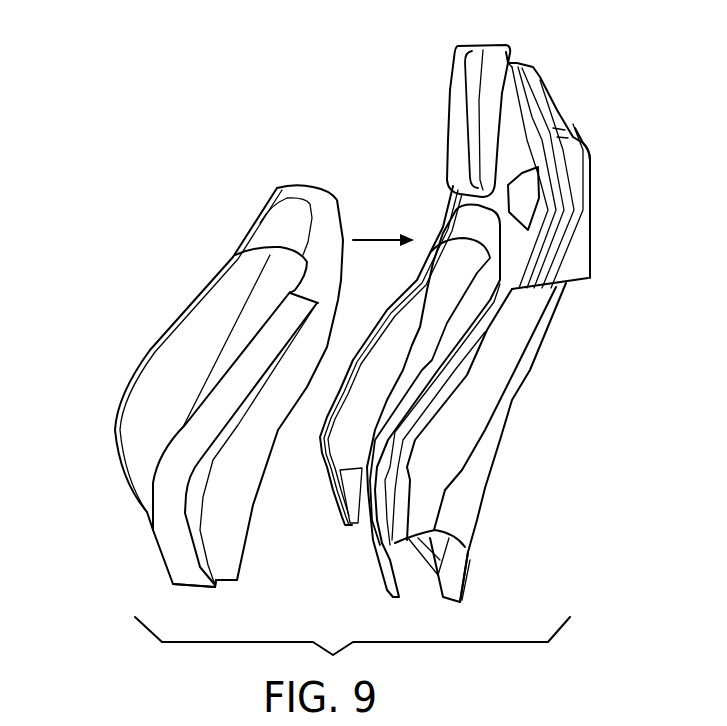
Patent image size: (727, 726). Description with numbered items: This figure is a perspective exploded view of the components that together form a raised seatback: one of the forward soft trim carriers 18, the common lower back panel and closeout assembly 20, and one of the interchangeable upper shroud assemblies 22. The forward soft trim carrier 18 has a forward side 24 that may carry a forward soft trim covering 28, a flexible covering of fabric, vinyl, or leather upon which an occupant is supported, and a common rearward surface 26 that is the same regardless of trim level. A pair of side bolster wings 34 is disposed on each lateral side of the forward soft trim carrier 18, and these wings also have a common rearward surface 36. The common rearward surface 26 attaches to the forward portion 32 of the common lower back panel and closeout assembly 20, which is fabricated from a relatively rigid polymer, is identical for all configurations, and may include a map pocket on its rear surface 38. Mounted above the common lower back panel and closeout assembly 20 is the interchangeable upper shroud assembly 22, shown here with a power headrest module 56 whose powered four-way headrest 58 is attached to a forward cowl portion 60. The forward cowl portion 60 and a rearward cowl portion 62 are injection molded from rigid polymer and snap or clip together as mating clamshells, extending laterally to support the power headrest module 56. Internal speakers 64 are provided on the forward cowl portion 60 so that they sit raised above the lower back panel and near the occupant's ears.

The forward soft trim carrier 18 is at (173, 523).
The common lower back panel and closeout assembly 20 is at (503, 377).
The interchangeable upper shroud assembly 22 is at (555, 110).
The forward side 24 is at (230, 355).
The common rearward surface 26 is at (240, 505).
The forward soft trim covering 28 is at (207, 398).
The forward portion 32 is at (458, 307).
The side bolster wing 34 is at (140, 402).
The common rearward surface 36 is at (200, 530).
The rear surface 38 is at (487, 488).
The power headrest module 56 is at (540, 80).
The headrest 58 is at (455, 100).
The forward cowl portion 60 is at (513, 63).
The rearward cowl portion 62 is at (583, 147).
The internal speaker 64 is at (535, 193).